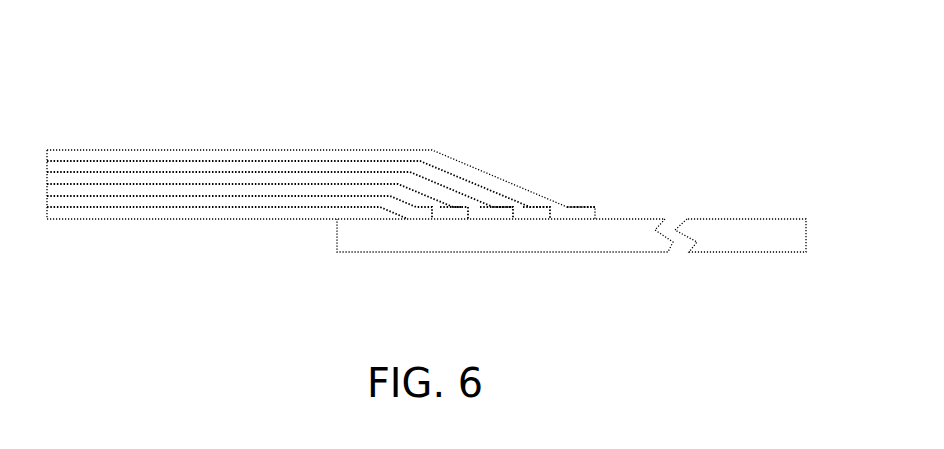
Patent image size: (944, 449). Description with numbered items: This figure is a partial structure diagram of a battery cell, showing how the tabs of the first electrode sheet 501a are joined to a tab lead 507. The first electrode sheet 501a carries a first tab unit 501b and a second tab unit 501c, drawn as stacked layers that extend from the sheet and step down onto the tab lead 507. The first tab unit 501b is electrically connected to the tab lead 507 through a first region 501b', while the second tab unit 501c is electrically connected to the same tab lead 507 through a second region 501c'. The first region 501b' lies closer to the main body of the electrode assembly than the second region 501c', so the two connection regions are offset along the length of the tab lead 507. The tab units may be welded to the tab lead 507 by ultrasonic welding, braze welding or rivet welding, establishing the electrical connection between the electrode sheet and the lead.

The first electrode sheet 501a is at (410, 85).
The first tab unit 501b is at (298, 225).
The second tab unit 501c is at (280, 222).
The first region 501b' is at (423, 250).
The second region 501c' is at (478, 250).
The tab lead 507 is at (802, 240).